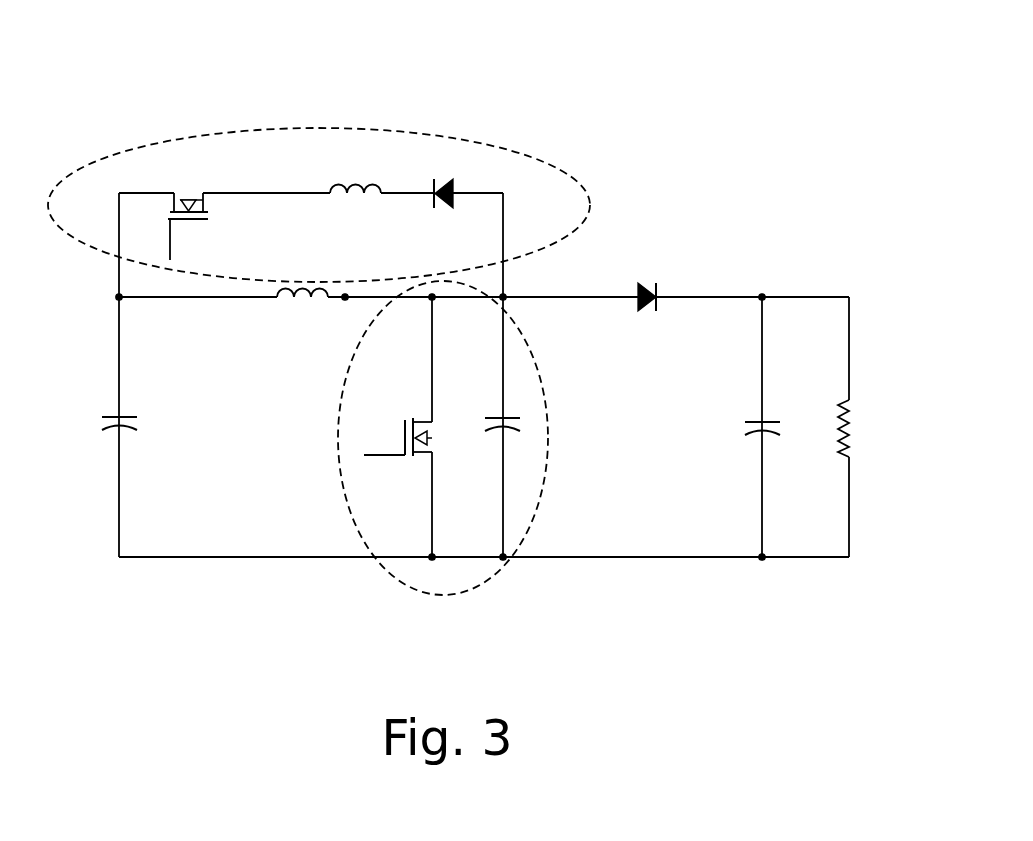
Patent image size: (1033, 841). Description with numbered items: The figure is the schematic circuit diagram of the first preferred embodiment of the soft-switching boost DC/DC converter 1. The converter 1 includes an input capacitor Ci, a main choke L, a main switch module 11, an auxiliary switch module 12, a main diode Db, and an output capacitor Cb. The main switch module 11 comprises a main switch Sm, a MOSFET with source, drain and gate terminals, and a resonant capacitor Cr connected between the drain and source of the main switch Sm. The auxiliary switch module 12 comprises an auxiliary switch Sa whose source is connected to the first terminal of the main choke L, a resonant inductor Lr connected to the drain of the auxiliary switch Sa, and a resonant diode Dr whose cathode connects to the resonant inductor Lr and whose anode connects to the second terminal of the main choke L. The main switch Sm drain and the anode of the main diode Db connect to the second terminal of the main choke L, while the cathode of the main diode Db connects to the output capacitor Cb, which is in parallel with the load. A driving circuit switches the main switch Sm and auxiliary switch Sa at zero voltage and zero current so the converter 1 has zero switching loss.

The soft-switching boost DC/DC converter 1 is at (676, 84).
The auxiliary switch module 12 is at (360, 128).
The main switch module 11 is at (505, 570).